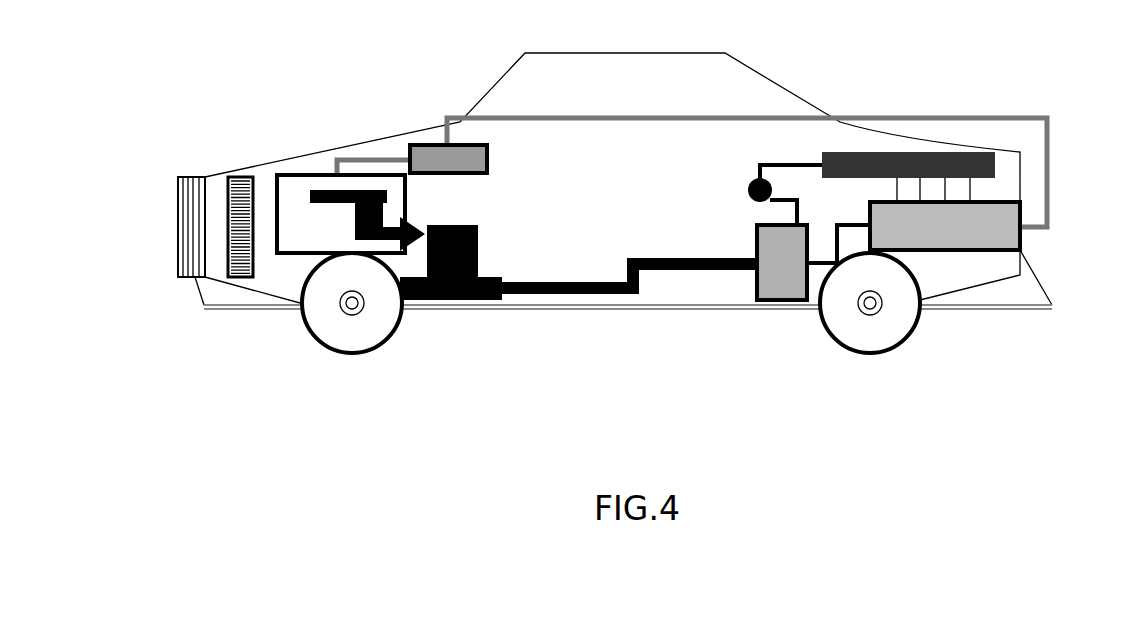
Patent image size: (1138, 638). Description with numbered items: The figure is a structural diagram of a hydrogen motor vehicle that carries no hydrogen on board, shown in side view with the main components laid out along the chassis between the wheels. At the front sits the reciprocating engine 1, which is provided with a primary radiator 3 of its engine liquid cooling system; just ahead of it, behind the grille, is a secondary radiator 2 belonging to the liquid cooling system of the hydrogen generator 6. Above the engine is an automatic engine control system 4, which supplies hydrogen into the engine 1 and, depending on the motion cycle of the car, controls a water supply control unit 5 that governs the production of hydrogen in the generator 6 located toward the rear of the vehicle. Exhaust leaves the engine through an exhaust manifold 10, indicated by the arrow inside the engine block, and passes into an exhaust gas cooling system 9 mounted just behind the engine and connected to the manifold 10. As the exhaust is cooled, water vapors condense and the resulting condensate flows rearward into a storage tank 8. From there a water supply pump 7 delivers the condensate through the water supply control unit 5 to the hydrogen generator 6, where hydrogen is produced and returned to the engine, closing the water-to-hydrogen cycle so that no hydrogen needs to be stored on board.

The reciprocating engine 1 is at (302, 227).
The secondary radiator 2 is at (187, 253).
The primary radiator 3 is at (225, 225).
The automatic engine control system 4 is at (410, 145).
The water supply control unit 5 is at (923, 152).
The hydrogen generator 6 is at (995, 225).
The water supply pump 7 is at (770, 182).
The storage tank 8 is at (750, 305).
The exhaust gas cooling system 9 is at (472, 300).
The exhaust manifold 10 is at (357, 245).